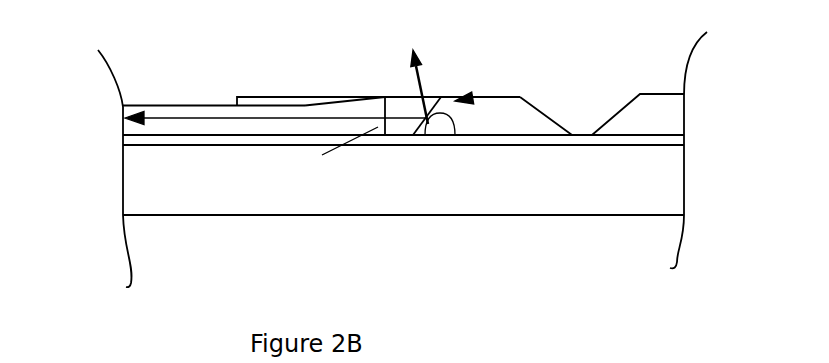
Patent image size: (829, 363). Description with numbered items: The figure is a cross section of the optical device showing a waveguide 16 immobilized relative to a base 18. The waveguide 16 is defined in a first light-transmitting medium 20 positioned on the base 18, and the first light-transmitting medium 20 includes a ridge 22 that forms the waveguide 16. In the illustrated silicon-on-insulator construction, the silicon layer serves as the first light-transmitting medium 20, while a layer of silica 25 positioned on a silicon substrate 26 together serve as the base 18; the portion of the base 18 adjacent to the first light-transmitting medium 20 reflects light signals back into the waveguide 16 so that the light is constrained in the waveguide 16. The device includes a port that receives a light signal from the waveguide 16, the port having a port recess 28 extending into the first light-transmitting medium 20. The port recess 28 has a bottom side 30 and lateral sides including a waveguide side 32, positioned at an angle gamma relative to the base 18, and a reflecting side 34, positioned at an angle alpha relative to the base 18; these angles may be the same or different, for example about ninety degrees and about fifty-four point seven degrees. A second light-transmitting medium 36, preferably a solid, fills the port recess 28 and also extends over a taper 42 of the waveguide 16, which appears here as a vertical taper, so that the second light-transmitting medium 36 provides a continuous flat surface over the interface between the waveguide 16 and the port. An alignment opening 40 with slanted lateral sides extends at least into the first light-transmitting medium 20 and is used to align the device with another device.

The waveguide 16 is at (98, 103).
The base 18 is at (95, 135).
The first light-transmitting medium 20 is at (500, 115).
The ridge 22 is at (207, 105).
The layer of silica 25 is at (182, 142).
The silicon substrate 26 is at (362, 211).
The port recess 28 is at (479, 97).
The bottom side 30 is at (392, 148).
The waveguide side 32 is at (385, 97).
The reflecting side 34 is at (436, 108).
The second light-transmitting medium 36 is at (268, 97).
The alignment opening 40 is at (547, 113).
The taper 42 is at (320, 98).